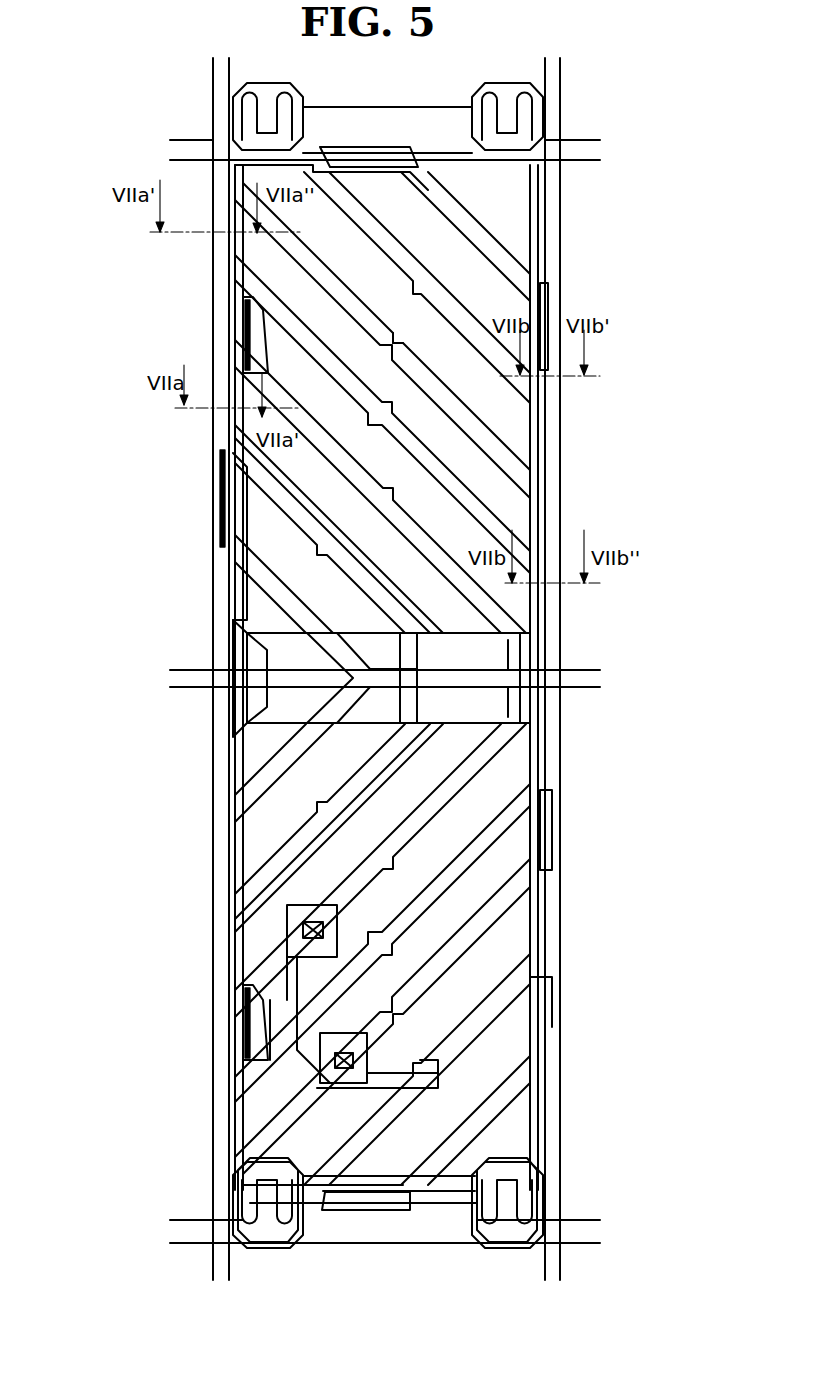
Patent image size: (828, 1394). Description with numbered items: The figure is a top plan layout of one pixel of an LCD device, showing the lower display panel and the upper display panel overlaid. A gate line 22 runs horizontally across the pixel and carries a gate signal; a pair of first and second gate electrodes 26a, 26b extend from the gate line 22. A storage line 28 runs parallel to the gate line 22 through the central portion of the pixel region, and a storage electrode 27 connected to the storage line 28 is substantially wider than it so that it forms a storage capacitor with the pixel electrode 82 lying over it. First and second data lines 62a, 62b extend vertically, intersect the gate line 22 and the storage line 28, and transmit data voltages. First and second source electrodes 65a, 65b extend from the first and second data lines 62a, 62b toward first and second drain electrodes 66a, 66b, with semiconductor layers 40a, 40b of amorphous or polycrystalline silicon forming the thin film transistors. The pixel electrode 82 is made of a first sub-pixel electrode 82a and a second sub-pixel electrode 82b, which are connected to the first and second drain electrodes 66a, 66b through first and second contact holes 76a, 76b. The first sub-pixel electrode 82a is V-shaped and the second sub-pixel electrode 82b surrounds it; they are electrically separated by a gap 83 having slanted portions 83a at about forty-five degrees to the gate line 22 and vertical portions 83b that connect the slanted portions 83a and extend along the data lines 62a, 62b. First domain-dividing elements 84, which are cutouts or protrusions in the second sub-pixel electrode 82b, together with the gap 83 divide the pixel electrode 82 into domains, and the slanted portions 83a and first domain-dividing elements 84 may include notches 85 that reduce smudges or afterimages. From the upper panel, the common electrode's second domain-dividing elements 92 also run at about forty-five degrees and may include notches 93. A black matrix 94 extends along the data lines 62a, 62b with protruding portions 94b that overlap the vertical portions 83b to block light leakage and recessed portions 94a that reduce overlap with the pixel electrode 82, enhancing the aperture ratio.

The gate line 22 is at (416, 1246).
The first gate electrode 26a is at (245, 1148).
The second gate electrode 26b is at (547, 1166).
The storage electrode 27 is at (455, 632).
The storage line 28 is at (583, 668).
The semiconductor layer 40a is at (305, 1232).
The semiconductor layer 40b is at (470, 1230).
The first data line 62a is at (230, 592).
The second data line 62b is at (547, 256).
The first source electrode 65a is at (255, 1248).
The second source electrode 65b is at (512, 1248).
The first drain electrode 66a is at (300, 978).
The second drain electrode 66b is at (490, 1070).
The first contact hole 76a is at (300, 928).
The second contact hole 76b is at (360, 1020).
The pixel electrode 82 is at (108, 1005).
The first sub-pixel electrode 82a is at (243, 1048).
The second sub-pixel electrode 82b is at (237, 1010).
The gap 83 is at (108, 283).
The slanted portion 83a is at (240, 300).
The vertical portion 83b is at (240, 328).
The first domain-dividing element 84 is at (383, 221).
The notch 85 is at (412, 294).
The second domain-dividing element 92 is at (490, 420).
The notch 93 is at (462, 240).
The black matrix 94 is at (108, 432).
The recessed portion 94a is at (240, 542).
The protruding portion 94b is at (240, 435).